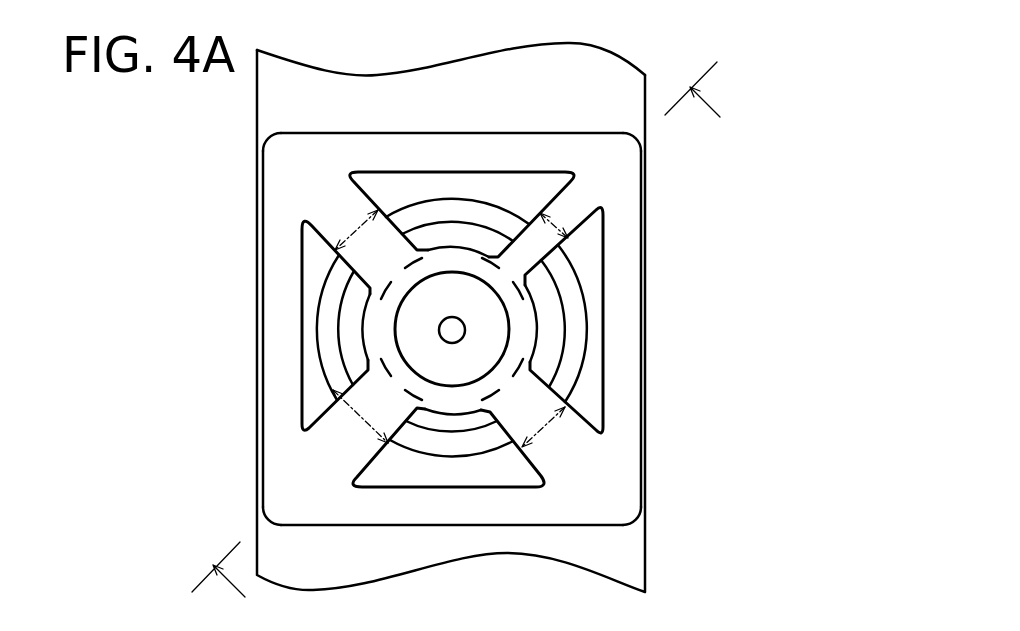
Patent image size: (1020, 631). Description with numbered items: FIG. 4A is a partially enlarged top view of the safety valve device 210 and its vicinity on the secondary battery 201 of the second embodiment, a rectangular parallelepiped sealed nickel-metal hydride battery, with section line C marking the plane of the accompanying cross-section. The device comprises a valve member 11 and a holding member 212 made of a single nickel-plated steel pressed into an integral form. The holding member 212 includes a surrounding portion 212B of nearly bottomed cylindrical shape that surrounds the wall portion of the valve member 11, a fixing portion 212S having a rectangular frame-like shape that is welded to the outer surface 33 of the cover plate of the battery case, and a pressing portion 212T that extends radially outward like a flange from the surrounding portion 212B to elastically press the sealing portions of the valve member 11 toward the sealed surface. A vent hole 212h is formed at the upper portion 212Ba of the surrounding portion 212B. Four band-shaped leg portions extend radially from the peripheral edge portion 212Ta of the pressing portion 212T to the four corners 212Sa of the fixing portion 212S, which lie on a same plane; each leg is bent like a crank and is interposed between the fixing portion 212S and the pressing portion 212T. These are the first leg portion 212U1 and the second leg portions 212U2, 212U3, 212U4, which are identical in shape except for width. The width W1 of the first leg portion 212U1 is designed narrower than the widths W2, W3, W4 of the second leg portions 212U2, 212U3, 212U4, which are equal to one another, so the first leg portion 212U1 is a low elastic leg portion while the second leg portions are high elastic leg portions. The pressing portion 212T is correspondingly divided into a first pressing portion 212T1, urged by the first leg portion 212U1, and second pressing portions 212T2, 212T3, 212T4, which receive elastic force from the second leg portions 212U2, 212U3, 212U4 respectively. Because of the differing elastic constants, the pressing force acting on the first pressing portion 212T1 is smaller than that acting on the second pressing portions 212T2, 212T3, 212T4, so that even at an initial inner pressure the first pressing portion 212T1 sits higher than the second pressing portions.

The secondary battery 201 is at (396, 52).
The outer surface 33 is at (623, 547).
The section line C is at (466, 341).
The safety valve device 210 is at (509, 308).
The holding member 212 is at (478, 308).
The fixing portion 212S is at (622, 166).
The corners 212Sa is at (285, 152).
The surrounding portion 212B is at (397, 330).
The upper portion 212Ba is at (492, 330).
The vent hole 212h is at (452, 343).
The pressing portion 212T is at (467, 400).
The peripheral edge portion 212Ta is at (447, 252).
The first pressing portion 212T1 is at (481, 250).
The second pressing portion 212T2 is at (531, 363).
The second pressing portion 212T3 is at (372, 354).
The second pressing portion 212T4 is at (400, 225).
The first leg portion 212U1 is at (629, 178).
The second leg portion 212U2 is at (641, 427).
The second leg portion 212U3 is at (271, 427).
The second leg portion 212U4 is at (270, 222).
The width of first leg portion W1 is at (568, 238).
The width of second leg portion W2 is at (539, 425).
The width of second leg portion W3 is at (363, 416).
The width of second leg portion W4 is at (363, 233).
The valve member 11 is at (579, 283).